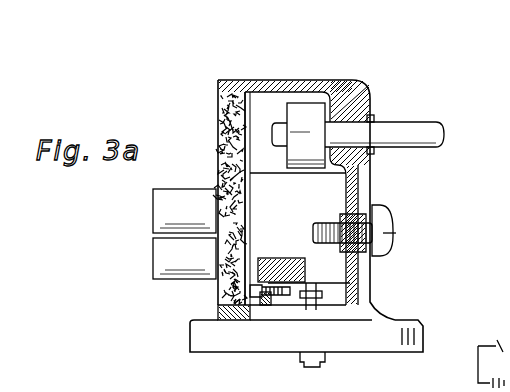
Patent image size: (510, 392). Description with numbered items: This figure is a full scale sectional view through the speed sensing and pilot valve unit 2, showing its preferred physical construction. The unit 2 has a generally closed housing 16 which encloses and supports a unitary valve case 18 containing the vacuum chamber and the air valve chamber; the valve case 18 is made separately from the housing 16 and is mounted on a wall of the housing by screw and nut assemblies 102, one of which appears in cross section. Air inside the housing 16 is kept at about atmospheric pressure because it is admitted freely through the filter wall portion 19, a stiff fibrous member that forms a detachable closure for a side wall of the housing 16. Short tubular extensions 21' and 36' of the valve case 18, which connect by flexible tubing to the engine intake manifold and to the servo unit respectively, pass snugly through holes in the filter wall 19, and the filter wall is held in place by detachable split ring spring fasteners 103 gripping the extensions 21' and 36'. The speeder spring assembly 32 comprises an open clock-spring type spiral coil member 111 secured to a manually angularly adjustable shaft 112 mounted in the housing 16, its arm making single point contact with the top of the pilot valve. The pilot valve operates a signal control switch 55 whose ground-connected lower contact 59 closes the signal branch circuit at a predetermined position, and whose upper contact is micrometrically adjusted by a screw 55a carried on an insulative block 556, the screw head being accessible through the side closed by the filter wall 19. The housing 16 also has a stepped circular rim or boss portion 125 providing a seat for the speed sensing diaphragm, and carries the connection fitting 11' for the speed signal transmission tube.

The speed sensing and pilot valve unit 2 is at (380, 283).
The connection fitting 11' is at (330, 372).
The housing 16 is at (370, 166).
The valve case 18 is at (300, 197).
The filter wall portion 19 is at (232, 122).
The tubular extension 21' is at (178, 202).
The speeder spring assembly 32 is at (298, 100).
The tubular extension 36' is at (184, 268).
The switch 55 is at (277, 304).
The adjusting screw 55a is at (260, 308).
The lower contact 59 is at (290, 306).
The screw and nut assembly 102 is at (348, 250).
The split ring spring fastener 103 is at (226, 180).
The spiral coil member 111 is at (302, 125).
The shaft 112 is at (412, 126).
The rim or boss portion 125 is at (192, 337).
The block 556 is at (272, 260).